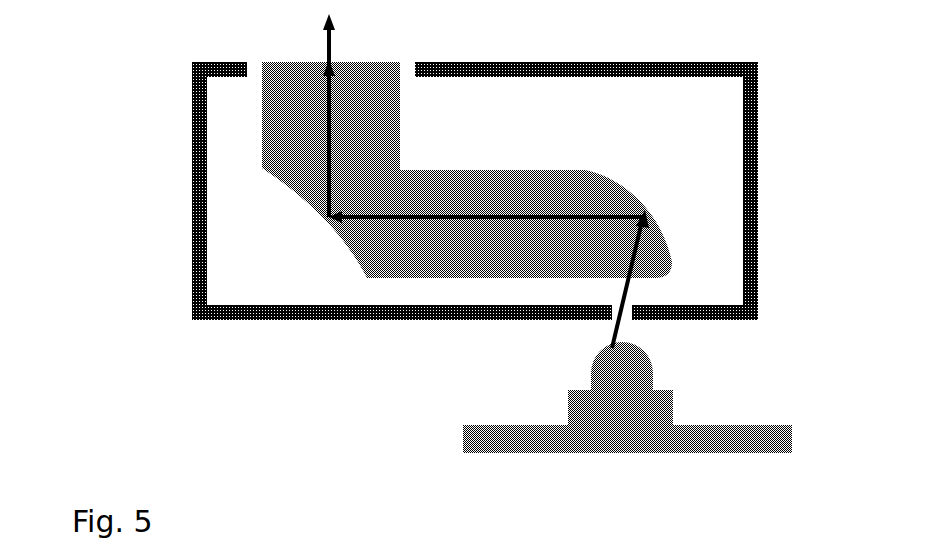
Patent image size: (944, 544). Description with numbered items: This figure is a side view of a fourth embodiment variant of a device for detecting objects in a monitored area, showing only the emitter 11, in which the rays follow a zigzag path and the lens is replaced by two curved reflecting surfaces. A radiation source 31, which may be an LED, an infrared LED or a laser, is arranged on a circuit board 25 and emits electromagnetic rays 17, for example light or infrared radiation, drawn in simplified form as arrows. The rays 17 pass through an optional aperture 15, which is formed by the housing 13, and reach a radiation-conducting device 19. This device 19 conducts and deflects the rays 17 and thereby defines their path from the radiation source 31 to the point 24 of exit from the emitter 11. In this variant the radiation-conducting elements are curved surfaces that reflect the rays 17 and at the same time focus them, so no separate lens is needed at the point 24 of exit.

The emitter 11 is at (165, 100).
The housing 13 is at (735, 62).
The aperture 15 is at (642, 328).
The rays 17 is at (330, 35).
The radiation-conducting device 19 is at (462, 164).
The point of exit 24 is at (328, 62).
The circuit board 25 is at (727, 425).
The radiation source 31 is at (625, 387).